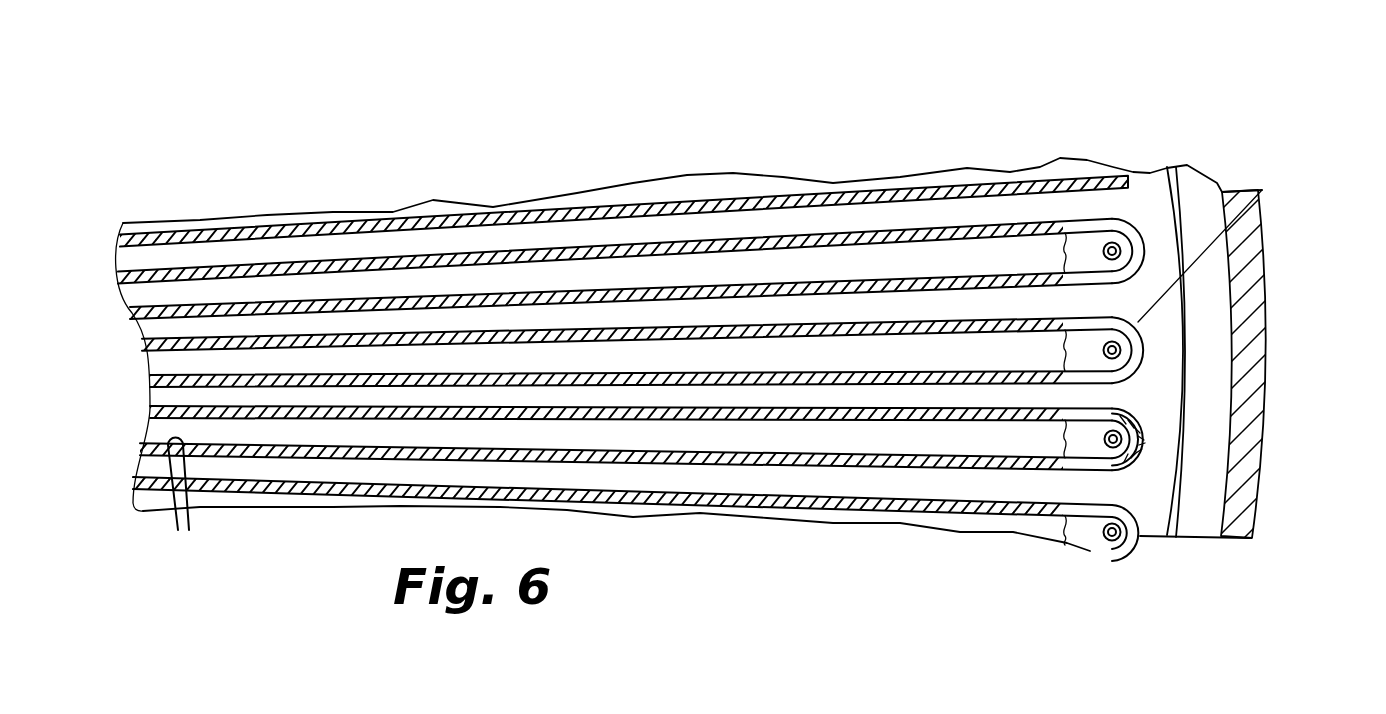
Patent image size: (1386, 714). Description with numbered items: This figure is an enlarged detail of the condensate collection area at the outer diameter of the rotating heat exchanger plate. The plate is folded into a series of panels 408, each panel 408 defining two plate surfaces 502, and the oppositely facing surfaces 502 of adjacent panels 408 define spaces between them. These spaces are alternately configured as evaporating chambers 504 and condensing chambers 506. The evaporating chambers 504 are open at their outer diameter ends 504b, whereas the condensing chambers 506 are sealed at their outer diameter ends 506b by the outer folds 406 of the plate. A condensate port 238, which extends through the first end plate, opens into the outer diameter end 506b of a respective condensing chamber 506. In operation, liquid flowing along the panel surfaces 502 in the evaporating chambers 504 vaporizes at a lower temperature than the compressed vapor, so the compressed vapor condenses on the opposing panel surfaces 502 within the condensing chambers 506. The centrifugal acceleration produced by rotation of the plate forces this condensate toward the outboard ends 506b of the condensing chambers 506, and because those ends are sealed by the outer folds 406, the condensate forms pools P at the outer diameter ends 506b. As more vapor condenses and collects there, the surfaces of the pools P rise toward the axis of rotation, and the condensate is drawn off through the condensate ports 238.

The condensate port 238 is at (1128, 222).
The outer fold 406 is at (1143, 262).
The panel 408 is at (378, 334).
The plate surface 502 is at (201, 511).
The evaporating chamber 504 is at (767, 310).
The outer diameter end of the evaporating chamber 504b is at (1018, 212).
The condensing chamber 506 is at (662, 443).
The outer diameter end of the condensing chamber 506b is at (1005, 263).
The pool P is at (1091, 250).